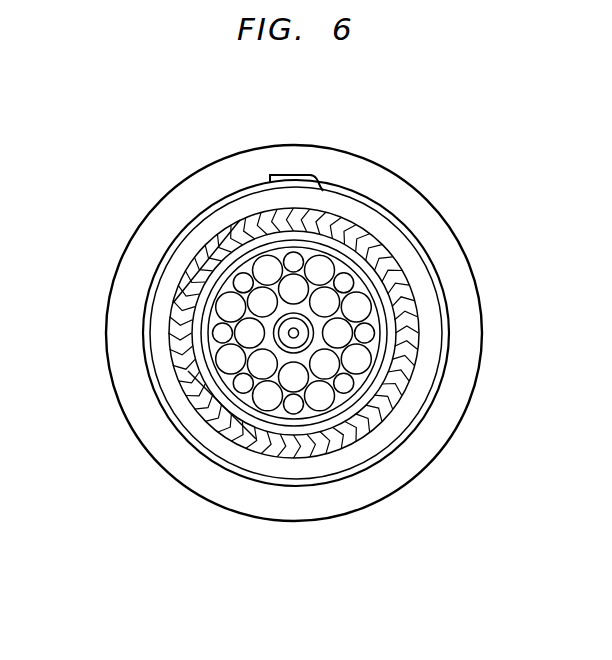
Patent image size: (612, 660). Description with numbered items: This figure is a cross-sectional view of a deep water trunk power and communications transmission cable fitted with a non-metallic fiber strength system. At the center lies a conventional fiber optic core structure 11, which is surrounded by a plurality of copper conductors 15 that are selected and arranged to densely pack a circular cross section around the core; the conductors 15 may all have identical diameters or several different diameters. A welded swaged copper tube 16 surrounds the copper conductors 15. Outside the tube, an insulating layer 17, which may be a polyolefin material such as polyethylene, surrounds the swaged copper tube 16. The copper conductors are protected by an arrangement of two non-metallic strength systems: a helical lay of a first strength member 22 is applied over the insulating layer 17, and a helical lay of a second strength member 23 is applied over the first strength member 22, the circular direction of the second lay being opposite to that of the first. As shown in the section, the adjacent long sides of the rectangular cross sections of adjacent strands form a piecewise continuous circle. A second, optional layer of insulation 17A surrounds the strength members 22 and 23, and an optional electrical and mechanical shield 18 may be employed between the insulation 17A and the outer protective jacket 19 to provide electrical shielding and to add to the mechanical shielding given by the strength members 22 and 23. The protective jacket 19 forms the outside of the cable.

The protective jacket 19 is at (148, 453).
The electrical and mechanical shield 18 is at (382, 212).
The second layer of insulation 17A is at (195, 244).
The insulating layer 17 is at (316, 248).
The welded swaged copper tube 16 is at (217, 311).
The copper conductors 15 is at (328, 300).
The fiber optic core structure 11 is at (348, 334).
The first strength member 22 is at (322, 435).
The second strength member 23 is at (293, 452).